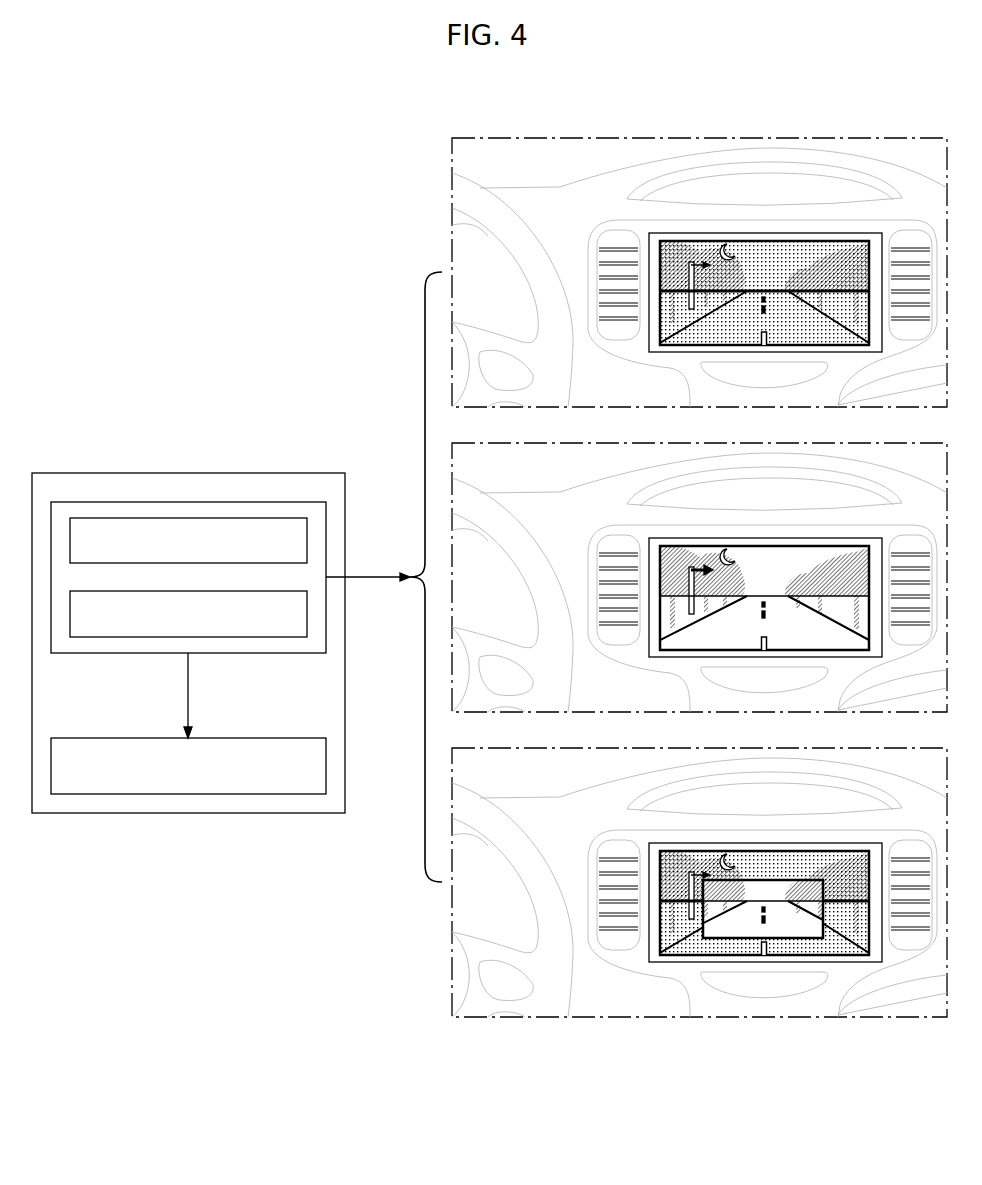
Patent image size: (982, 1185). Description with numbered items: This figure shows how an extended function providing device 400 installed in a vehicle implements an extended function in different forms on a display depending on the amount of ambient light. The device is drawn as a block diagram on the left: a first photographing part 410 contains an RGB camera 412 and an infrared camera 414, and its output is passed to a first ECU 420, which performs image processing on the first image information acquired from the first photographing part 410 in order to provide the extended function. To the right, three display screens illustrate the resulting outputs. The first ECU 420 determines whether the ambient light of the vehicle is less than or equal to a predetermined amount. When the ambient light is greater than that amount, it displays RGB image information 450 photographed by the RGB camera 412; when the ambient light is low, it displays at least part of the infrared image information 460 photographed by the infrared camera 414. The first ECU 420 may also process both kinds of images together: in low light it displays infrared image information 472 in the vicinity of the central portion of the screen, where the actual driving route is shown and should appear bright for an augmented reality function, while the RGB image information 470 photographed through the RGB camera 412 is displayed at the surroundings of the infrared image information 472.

The extended function providing device 400 is at (287, 473).
The first photographing part 410 is at (326, 517).
The RGB camera 412 is at (307, 545).
The infrared camera 414 is at (307, 611).
The first ECU 420 is at (326, 766).
The RGB image information 450 is at (763, 241).
The infrared image information 460 is at (765, 568).
The RGB image information 470 is at (765, 891).
The infrared image information 472 is at (764, 924).